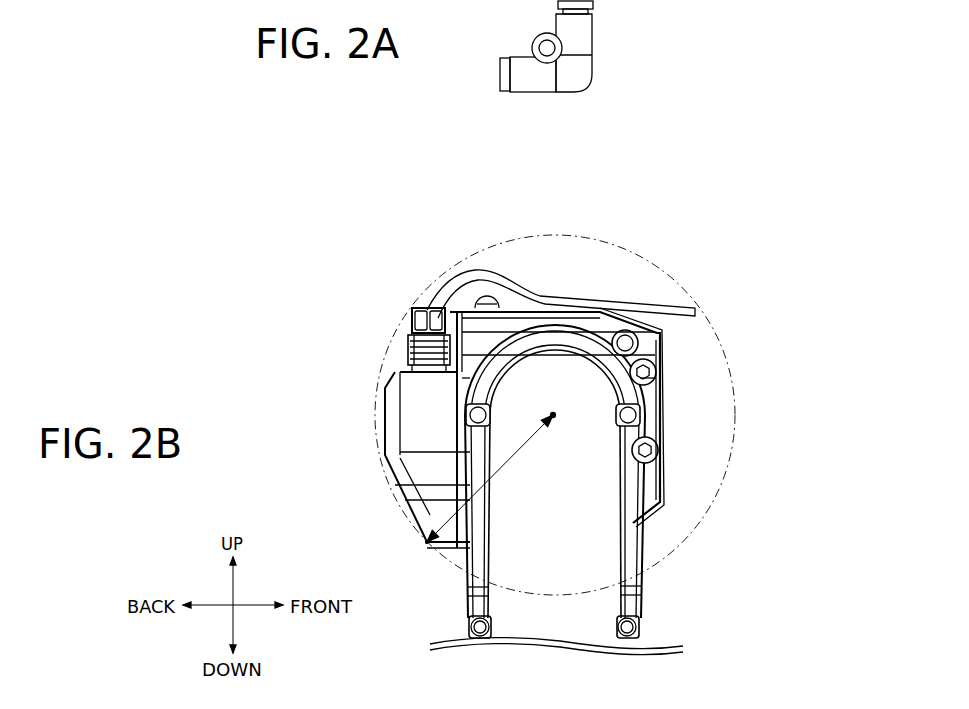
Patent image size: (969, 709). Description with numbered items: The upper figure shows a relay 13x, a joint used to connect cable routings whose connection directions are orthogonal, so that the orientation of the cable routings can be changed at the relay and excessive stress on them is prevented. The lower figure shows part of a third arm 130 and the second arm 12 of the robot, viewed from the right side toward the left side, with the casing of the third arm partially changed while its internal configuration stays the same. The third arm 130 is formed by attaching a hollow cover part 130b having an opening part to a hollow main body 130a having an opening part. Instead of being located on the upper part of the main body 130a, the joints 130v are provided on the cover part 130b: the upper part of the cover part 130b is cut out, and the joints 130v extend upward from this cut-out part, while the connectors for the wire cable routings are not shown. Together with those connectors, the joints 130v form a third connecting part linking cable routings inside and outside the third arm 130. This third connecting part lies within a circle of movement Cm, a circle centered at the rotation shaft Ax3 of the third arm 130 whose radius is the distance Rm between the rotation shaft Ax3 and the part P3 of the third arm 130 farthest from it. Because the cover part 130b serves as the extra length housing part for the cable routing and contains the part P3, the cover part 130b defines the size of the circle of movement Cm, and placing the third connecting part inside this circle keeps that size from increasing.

In FIG. 2A, the relay 13x is at (575, 56).
In FIG. 2B, the third arm 130 is at (621, 481).
In FIG. 2B, the main body 130a is at (632, 398).
In FIG. 2B, the cover part 130b is at (390, 375).
In FIG. 2B, the joints 130v is at (415, 307).
In FIG. 2B, the second arm 12 is at (598, 629).
In FIG. 2B, the rotation shaft Ax3 is at (553, 415).
In FIG. 2B, the circle of movement Cm is at (600, 415).
In FIG. 2B, the distance Rm is at (470, 515).
In FIG. 2B, the part farthest from the rotation shaft P3 is at (380, 566).